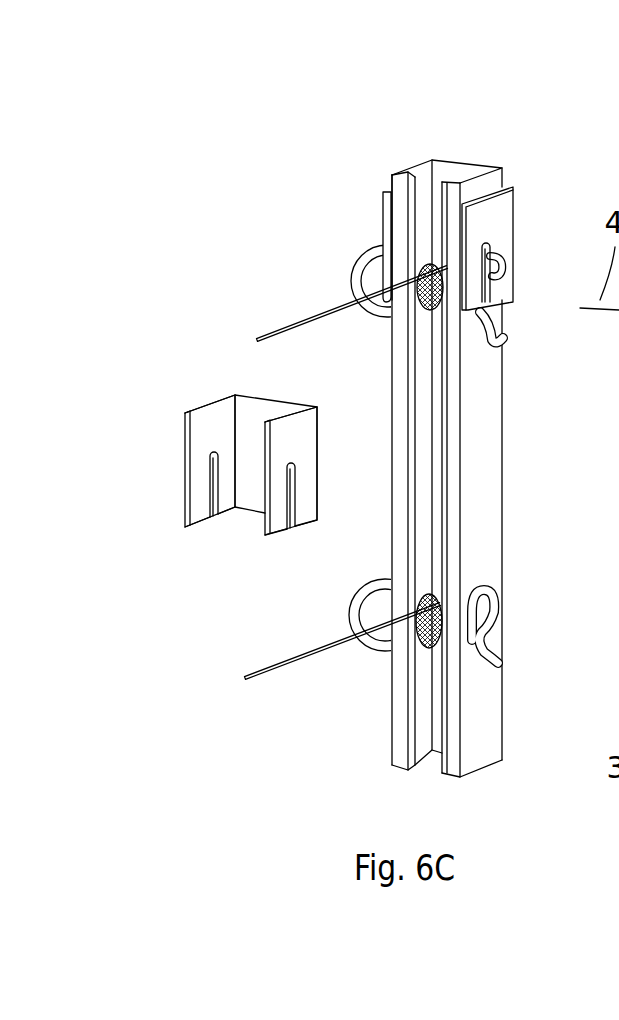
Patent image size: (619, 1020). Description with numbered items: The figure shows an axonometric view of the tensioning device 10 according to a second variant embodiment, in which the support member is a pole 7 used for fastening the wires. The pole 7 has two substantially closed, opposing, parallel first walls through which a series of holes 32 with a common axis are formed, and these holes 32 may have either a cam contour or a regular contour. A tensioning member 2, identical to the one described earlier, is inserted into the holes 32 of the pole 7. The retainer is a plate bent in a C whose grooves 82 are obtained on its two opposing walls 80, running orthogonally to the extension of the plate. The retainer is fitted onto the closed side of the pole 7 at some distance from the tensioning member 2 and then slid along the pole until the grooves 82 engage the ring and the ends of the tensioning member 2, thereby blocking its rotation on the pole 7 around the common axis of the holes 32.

The tensioning device 10 is at (532, 98).
The pole 7 is at (435, 153).
The tensioning member 2 is at (352, 256).
The opposing walls 80 is at (198, 423).
The grooves 82 is at (287, 531).
The holes 32 is at (478, 628).